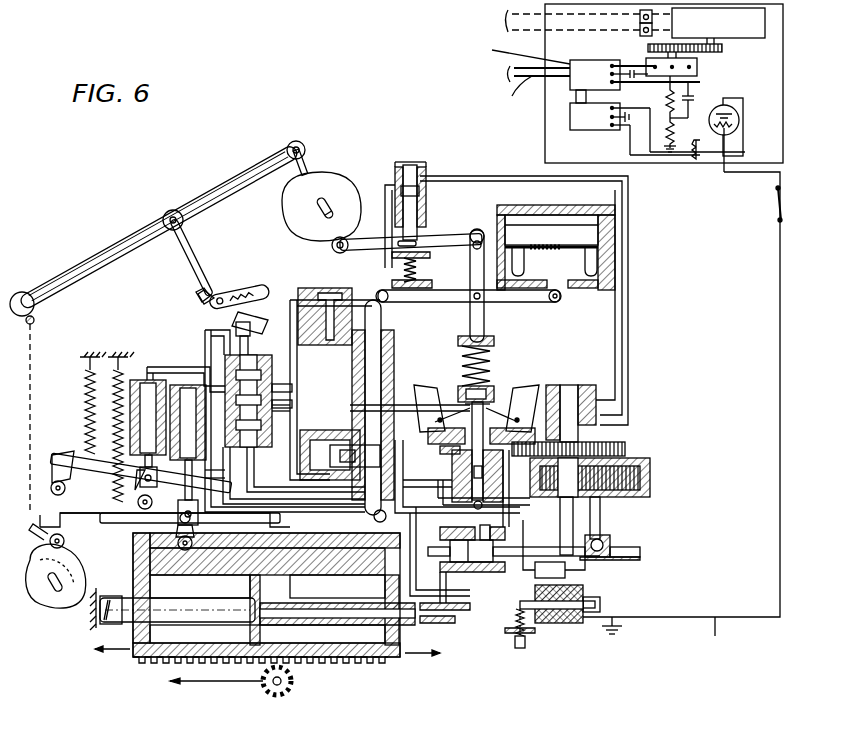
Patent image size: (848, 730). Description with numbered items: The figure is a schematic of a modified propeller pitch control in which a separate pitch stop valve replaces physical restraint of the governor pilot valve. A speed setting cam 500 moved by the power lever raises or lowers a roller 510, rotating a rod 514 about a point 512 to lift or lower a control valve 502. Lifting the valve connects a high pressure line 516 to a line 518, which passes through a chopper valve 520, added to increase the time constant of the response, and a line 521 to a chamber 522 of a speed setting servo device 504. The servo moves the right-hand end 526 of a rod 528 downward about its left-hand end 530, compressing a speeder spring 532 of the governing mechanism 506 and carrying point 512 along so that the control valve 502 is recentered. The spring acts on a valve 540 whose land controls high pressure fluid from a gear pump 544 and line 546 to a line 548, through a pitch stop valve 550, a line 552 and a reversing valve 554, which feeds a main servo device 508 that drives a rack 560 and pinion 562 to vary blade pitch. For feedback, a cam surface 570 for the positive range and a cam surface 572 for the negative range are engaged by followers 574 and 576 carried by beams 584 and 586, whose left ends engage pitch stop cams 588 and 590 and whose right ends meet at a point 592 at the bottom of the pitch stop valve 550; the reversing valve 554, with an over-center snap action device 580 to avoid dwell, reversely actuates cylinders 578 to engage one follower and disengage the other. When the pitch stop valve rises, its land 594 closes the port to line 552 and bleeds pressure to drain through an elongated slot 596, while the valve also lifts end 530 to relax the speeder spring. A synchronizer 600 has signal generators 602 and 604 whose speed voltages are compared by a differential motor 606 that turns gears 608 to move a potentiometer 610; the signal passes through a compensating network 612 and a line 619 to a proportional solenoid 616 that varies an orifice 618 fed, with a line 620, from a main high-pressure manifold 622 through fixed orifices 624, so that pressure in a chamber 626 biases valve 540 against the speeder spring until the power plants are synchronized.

The speed setting cam 500 is at (334, 172).
The control valve 502 is at (414, 172).
The servo device 504 is at (612, 243).
The governing mechanism 506 is at (516, 382).
The main servo device 508 is at (372, 660).
The roller 510 is at (335, 247).
The point 512 is at (478, 232).
The rod 514 is at (468, 237).
The high pressure line 516 is at (388, 172).
The line 518 is at (478, 176).
The chopper valve 520 is at (568, 386).
The line 521 is at (612, 334).
The chamber 522 is at (550, 218).
The right-hand end 526 is at (558, 298).
The rod 528 is at (506, 300).
The left-hand end 530 is at (387, 300).
The speeder spring 532 is at (462, 354).
The valve 540 is at (470, 458).
The gear pump 544 is at (614, 496).
The line 546 is at (570, 522).
The line 548 is at (402, 390).
The pitch stop valve 550 is at (258, 372).
The line 552 is at (272, 405).
The reversing valve 554 is at (272, 388).
The rack 560 is at (322, 664).
The pinion 562 is at (262, 698).
The cam surface 570 is at (202, 564).
The cam surface 572 is at (333, 560).
The follower 574 is at (178, 543).
The follower 576 is at (130, 526).
The cylinders 578 is at (163, 378).
The over-center snap action device 580 is at (245, 280).
The beam 584 is at (62, 482).
The beam 586 is at (52, 452).
The pitch stop cam 588 is at (42, 608).
The pitch stop cam 590 is at (24, 580).
The point 592 is at (372, 518).
The land 594 is at (470, 440).
The elongated slot 596 is at (365, 494).
The synchronizer 600 is at (662, 163).
The signal generator 602 is at (640, 14).
The signal generator 604 is at (640, 32).
The differential motor 606 is at (755, 40).
The gears 608 is at (720, 52).
The potentiometer 610 is at (697, 74).
The compensating network 612 is at (754, 99).
The proportional solenoid 616 is at (564, 624).
The orifice 618 is at (520, 604).
The conductor 619 is at (776, 258).
The line 620 is at (506, 554).
The main high-pressure manifold 622 is at (636, 552).
The fixed orifices 624 is at (566, 576).
The chamber 626 is at (470, 470).